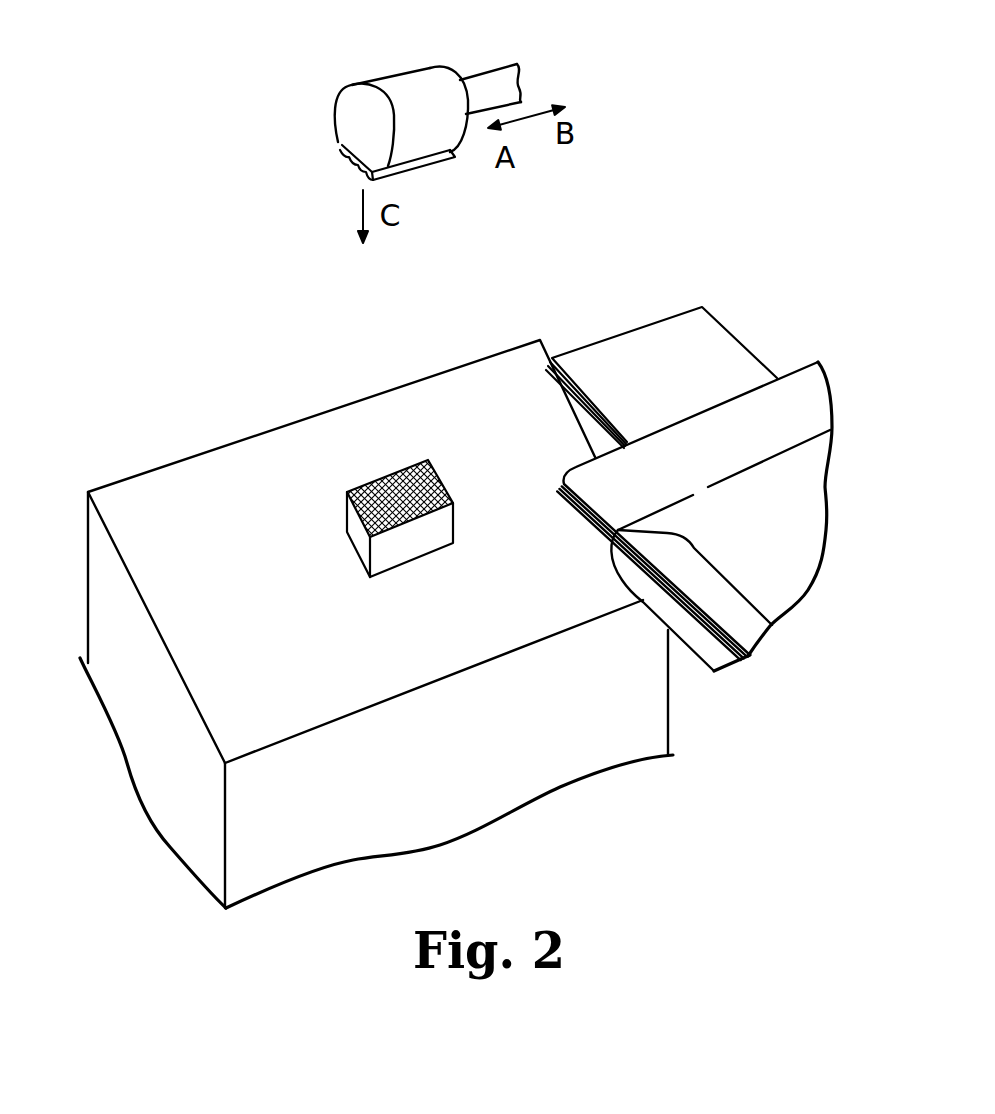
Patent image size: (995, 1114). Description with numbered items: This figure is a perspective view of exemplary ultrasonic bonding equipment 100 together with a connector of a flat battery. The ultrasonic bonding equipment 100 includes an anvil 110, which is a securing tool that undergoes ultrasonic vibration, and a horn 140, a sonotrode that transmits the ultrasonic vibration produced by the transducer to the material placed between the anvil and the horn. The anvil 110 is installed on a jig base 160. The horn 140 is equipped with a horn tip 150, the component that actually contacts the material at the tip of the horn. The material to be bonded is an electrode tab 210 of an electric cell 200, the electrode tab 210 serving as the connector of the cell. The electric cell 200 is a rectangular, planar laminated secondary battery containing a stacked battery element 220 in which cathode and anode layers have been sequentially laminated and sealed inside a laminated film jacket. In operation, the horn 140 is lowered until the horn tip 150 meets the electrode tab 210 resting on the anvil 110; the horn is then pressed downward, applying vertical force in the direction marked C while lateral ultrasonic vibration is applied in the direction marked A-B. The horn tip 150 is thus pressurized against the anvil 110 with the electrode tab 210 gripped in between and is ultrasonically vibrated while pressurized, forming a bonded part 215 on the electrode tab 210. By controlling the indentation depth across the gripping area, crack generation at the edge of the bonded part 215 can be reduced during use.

The ultrasonic bonding equipment 100 is at (543, 236).
The anvil 110 is at (440, 475).
The horn 140 is at (505, 75).
The horn tip 150 is at (423, 167).
The jig base 160 is at (212, 722).
The electric cell 200 is at (660, 607).
The electrode tab 210 is at (703, 322).
The bonded part 215 is at (627, 340).
The battery element 220 is at (750, 558).